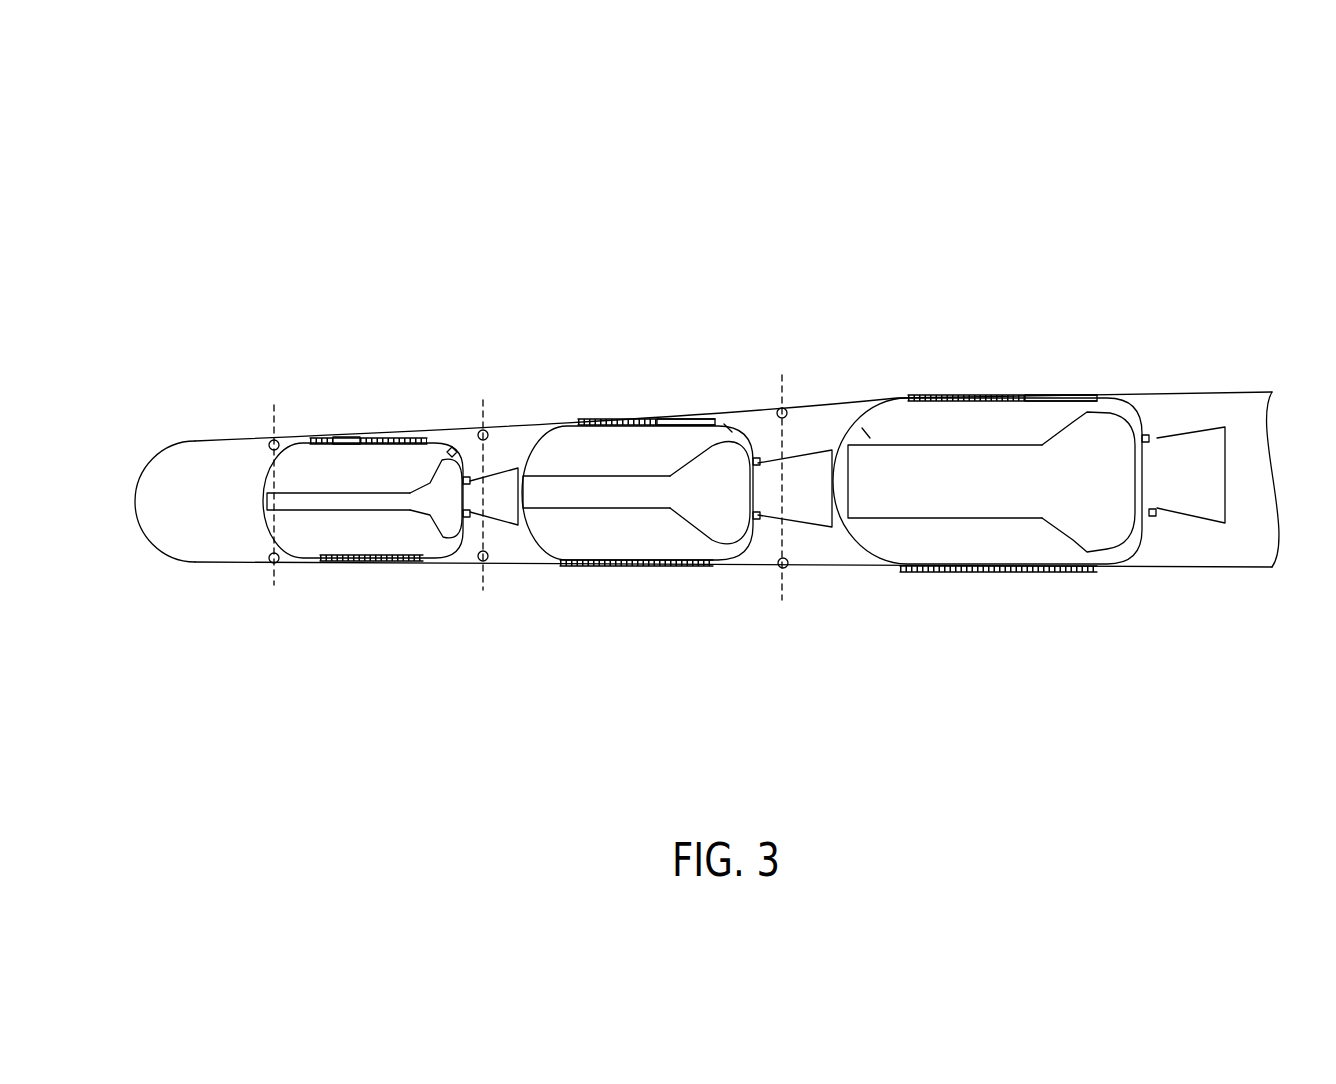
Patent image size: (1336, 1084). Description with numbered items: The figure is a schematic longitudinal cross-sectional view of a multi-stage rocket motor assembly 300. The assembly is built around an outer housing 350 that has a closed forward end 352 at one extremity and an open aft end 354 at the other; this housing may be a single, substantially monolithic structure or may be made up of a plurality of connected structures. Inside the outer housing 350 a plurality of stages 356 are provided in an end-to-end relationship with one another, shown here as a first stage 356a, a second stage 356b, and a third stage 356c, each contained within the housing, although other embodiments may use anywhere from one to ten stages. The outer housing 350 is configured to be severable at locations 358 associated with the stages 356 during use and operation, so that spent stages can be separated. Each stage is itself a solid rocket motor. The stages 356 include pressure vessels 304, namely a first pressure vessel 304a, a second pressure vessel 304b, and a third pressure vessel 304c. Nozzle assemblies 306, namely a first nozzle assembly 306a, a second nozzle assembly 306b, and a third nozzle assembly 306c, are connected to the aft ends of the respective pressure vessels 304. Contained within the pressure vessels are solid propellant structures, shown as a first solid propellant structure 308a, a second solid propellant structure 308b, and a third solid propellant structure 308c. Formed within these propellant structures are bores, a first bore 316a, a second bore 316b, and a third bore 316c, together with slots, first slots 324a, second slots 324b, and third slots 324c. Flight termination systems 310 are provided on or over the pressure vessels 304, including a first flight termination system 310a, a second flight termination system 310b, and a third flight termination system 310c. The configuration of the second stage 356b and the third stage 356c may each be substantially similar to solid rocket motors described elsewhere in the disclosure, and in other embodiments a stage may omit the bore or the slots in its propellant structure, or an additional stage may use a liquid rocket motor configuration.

The multi-stage rocket motor assembly 300 is at (576, 216).
The outer housing 350 is at (188, 562).
The closed forward end 352 is at (147, 445).
The open aft end 354 is at (1237, 553).
The locations 358 is at (267, 576).
The pressure vessels 304 is at (276, 650).
The first pressure vessel 304a is at (883, 552).
The second pressure vessel 304b is at (638, 545).
The third pressure vessel 304c is at (417, 540).
The nozzle assemblies 306 is at (1097, 213).
The first nozzle assembly 306a is at (1187, 477).
The second nozzle assembly 306b is at (823, 463).
The third nozzle assembly 306c is at (502, 492).
The first solid propellant structure 308a is at (982, 553).
The second solid propellant structure 308b is at (610, 540).
The third solid propellant structure 308c is at (328, 540).
The flight termination systems 310 is at (1107, 648).
The first flight termination system 310a is at (1057, 403).
The second flight termination system 310b is at (687, 427).
The third flight termination system 310c is at (343, 447).
The first bore 316a is at (963, 472).
The second bore 316b is at (613, 483).
The third bore 316c is at (322, 492).
The first slots 324a is at (1108, 533).
The second slots 324b is at (717, 527).
The third slots 324c is at (442, 528).
The stages 356 is at (262, 223).
The first stage 356a is at (867, 433).
The second stage 356b is at (538, 445).
The third stage 356c is at (403, 463).